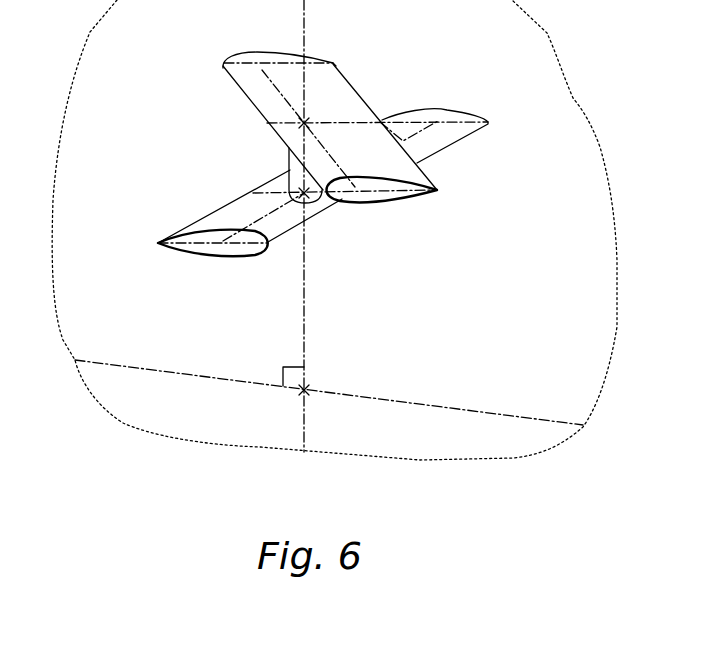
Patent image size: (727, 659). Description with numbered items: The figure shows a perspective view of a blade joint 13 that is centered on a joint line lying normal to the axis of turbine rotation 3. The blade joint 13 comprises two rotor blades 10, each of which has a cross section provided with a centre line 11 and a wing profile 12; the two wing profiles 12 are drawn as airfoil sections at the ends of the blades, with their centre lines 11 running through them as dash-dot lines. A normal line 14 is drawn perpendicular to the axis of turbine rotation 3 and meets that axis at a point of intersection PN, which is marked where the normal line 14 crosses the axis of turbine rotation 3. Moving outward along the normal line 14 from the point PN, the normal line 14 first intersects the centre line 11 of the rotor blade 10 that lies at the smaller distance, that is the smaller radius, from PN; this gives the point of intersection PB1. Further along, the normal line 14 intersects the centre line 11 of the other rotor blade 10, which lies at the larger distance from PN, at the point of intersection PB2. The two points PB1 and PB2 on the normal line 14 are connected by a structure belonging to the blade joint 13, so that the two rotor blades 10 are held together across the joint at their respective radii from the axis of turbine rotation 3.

The axis of turbine rotation 3 is at (486, 401).
The rotor blade 10 is at (439, 173).
The centre line 11 is at (267, 94).
The wing profile 12 is at (217, 266).
The blade joint 13 is at (162, 149).
The normal line 14 is at (294, 325).
The point of intersection with the axis of turbine rotation PN is at (320, 377).
The point of intersection with the inner centre line PB1 is at (320, 208).
The point of intersection with the outer centre line PB2 is at (319, 108).